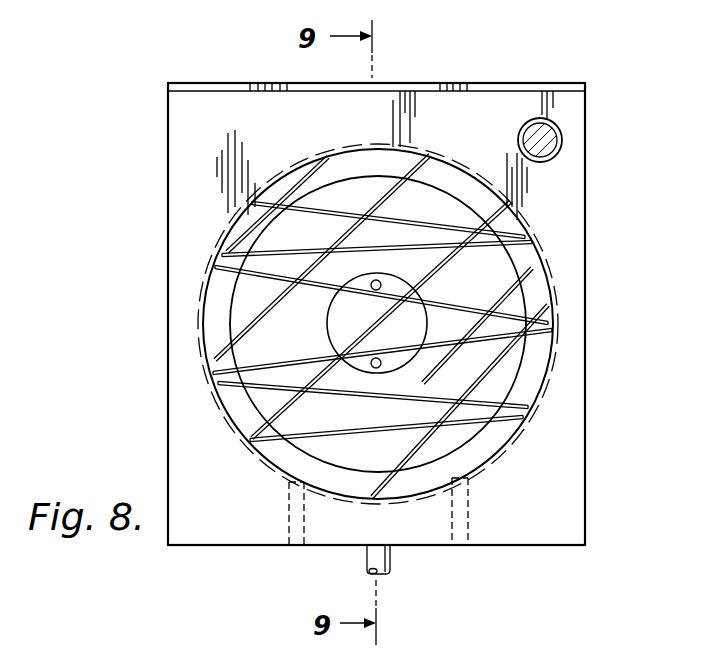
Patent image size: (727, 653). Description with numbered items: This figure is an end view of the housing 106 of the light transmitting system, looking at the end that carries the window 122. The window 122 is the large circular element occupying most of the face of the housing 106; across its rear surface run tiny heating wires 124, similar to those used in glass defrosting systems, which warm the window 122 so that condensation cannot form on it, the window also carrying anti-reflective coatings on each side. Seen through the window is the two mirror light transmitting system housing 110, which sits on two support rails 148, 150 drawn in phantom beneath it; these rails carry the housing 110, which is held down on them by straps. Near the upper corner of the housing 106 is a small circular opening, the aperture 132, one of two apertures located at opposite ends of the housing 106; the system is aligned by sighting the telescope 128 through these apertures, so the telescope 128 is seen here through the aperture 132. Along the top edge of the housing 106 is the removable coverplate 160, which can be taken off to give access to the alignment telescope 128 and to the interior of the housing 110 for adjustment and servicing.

The housing 106 is at (583, 413).
The removable coverplate 160 is at (241, 83).
The telescope 128 is at (561, 135).
The aperture 132 is at (561, 147).
The two mirror light transmitting system housing 110 is at (205, 373).
The heating wires 124 is at (548, 302).
The window 122 is at (258, 283).
The support rail 148 is at (292, 545).
The support rail 150 is at (460, 532).